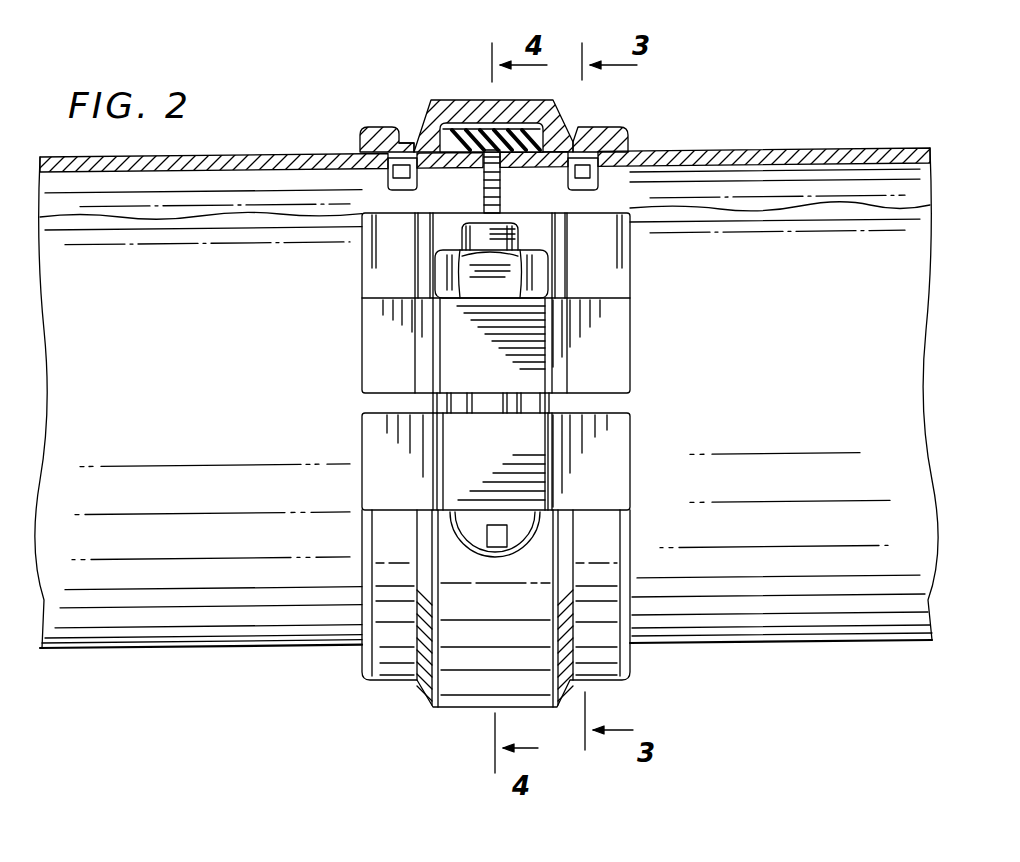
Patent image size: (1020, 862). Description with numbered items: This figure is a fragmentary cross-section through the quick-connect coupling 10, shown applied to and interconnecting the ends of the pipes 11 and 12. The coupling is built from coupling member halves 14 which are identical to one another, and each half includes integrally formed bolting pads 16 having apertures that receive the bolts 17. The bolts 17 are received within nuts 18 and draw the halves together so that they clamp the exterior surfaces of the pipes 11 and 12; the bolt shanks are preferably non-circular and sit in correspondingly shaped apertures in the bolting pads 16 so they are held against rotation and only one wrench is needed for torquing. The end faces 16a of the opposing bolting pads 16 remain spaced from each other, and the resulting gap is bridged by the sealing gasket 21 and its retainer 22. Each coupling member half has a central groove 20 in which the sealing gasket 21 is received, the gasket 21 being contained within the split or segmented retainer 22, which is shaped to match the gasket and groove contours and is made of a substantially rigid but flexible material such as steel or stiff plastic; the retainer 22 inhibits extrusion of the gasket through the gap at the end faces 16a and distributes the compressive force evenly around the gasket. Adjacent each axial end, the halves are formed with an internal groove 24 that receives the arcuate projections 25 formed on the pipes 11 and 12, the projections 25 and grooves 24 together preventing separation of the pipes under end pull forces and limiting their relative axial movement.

The quick-connect coupling 10 is at (352, 127).
The pipe 11 is at (747, 152).
The pipe 12 is at (277, 156).
The coupling member half 14 is at (428, 135).
The bolting pad 16 is at (518, 385).
The end face 16a is at (630, 393).
The bolt 17 is at (520, 238).
The nut 18 is at (545, 280).
The central groove 20 is at (476, 124).
The sealing gasket 21 is at (548, 128).
The retainer 22 is at (553, 100).
The internal groove 24 is at (413, 146).
The arcuate projection 25 is at (392, 147).